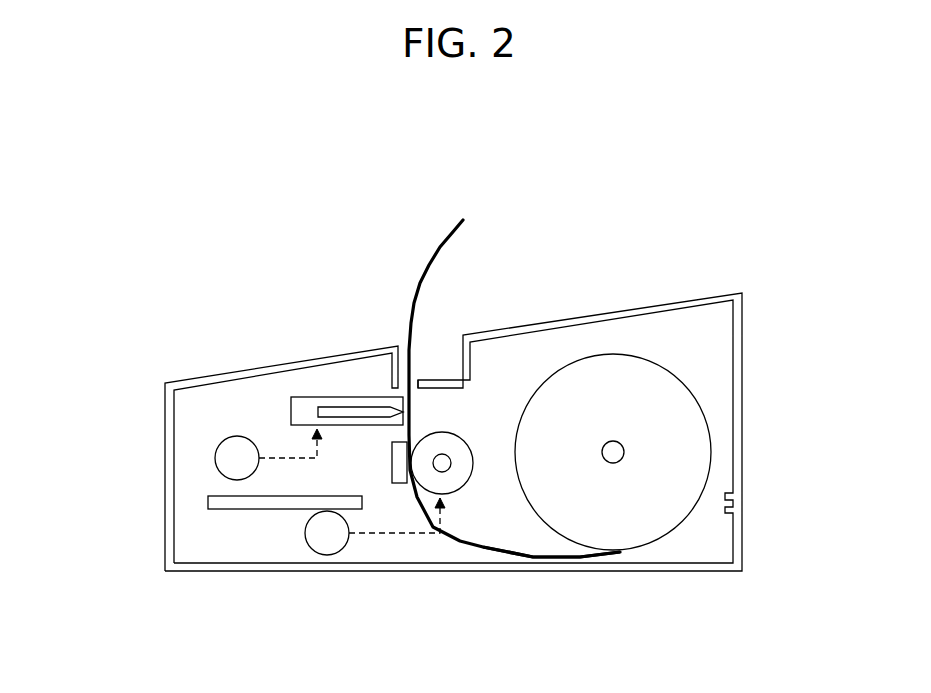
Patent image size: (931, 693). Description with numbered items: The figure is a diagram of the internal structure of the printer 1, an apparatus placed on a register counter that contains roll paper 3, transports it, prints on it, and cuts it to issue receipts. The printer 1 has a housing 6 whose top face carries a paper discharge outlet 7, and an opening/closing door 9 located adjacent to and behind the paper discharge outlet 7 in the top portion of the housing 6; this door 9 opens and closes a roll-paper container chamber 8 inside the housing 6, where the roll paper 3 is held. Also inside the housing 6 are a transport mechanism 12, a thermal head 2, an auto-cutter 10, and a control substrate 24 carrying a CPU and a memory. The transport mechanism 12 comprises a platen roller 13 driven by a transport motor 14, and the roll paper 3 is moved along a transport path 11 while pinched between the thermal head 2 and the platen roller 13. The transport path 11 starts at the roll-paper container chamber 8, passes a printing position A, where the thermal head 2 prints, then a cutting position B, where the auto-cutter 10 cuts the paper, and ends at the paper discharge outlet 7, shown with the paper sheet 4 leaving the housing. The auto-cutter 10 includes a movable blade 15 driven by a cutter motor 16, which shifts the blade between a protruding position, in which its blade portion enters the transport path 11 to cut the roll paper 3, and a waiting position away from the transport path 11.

The printer 1 is at (431, 364).
The thermal head 2 is at (390, 472).
The roll paper 3 is at (677, 470).
The recording sheet 4 is at (443, 241).
The housing 6 is at (283, 363).
The paper discharge outlet 7 is at (413, 378).
The roll-paper container chamber 8 is at (675, 372).
The opening/closing door 9 is at (590, 315).
The auto-cutter 10 is at (322, 393).
The transport path 11 is at (510, 552).
The transport mechanism 12 is at (463, 490).
The platen roller 13 is at (467, 437).
The transport motor 14 is at (308, 548).
The movable blade 15 is at (352, 407).
The cutter motor 16 is at (237, 436).
The control substrate 24 is at (242, 502).
The printing position A is at (412, 462).
The cutting position B is at (412, 412).